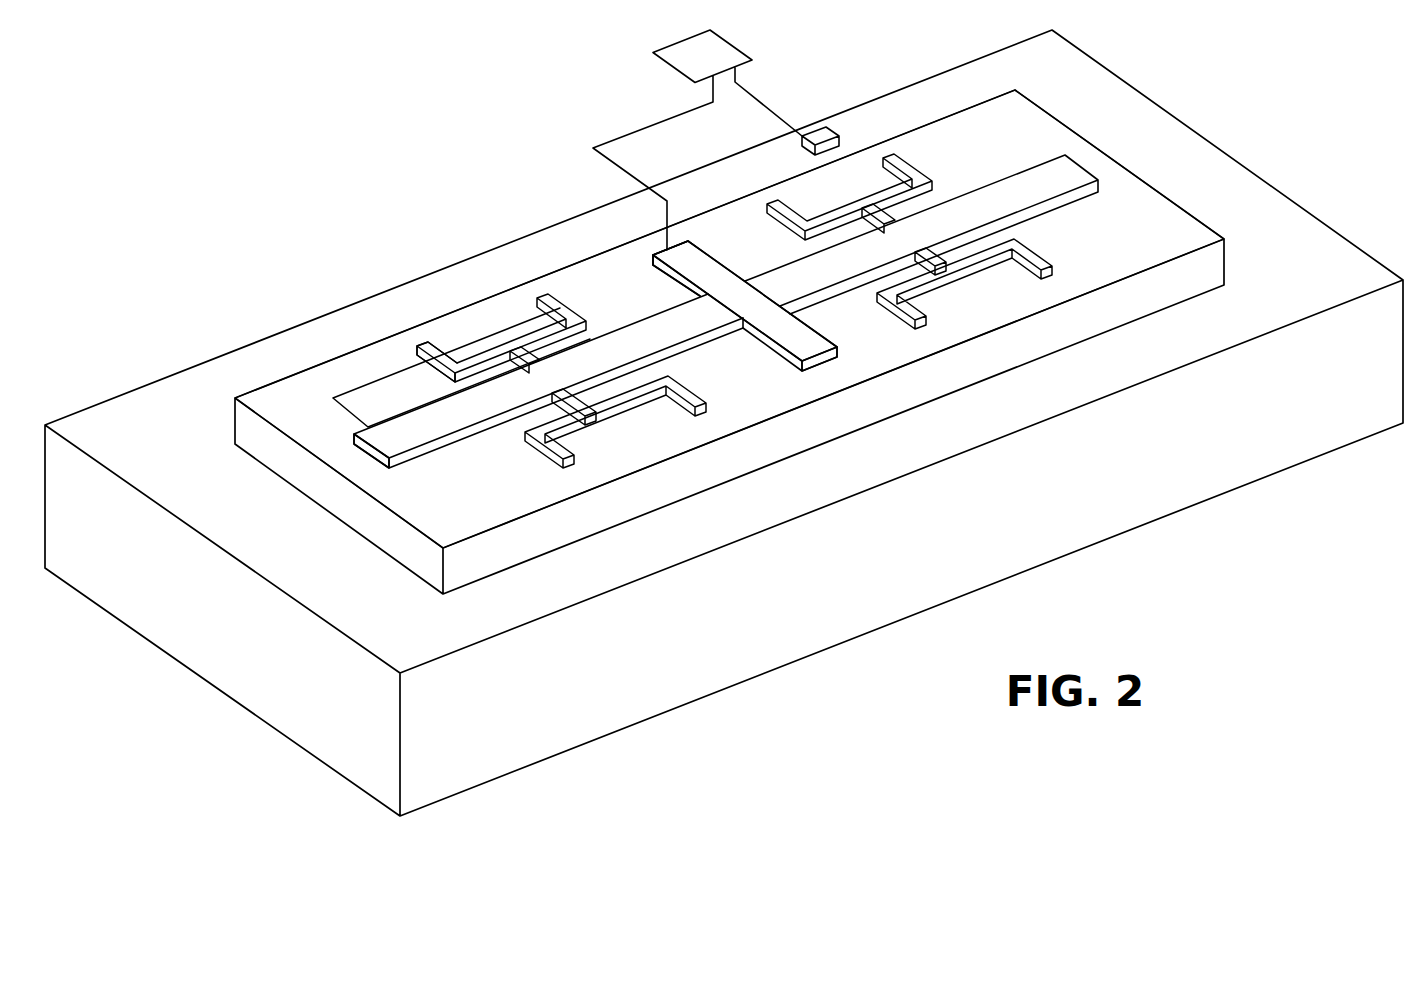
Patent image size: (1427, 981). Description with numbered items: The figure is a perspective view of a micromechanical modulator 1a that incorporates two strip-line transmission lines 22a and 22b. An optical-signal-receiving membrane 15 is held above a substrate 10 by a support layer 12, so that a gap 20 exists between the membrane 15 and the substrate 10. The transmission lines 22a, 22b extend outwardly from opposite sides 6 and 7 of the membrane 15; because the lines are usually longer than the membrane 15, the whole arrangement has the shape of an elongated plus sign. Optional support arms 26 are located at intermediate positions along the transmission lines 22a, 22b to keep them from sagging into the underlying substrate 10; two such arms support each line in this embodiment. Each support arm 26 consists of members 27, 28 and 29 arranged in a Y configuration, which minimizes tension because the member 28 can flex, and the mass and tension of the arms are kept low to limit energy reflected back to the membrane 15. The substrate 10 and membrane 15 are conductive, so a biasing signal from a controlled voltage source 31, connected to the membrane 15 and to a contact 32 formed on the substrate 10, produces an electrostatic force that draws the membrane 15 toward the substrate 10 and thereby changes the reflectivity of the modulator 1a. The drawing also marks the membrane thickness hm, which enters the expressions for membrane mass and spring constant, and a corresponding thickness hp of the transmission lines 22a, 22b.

The micromechanical modulator 1a is at (383, 180).
The side of the membrane 6 is at (788, 352).
The side of the membrane 7 is at (722, 258).
The substrate 10 is at (568, 735).
The support layer 12 is at (420, 553).
The optical-signal-receiving membrane 15 is at (690, 249).
The gap 20 is at (662, 302).
The strip-line transmission line 22a is at (402, 440).
The strip-line transmission line 22b is at (1077, 177).
The support arm 26 is at (404, 366).
The member of support arm 27 is at (520, 348).
The member of support arm 28 is at (477, 360).
The member of support arm 29 is at (422, 337).
The controlled voltage source 31 is at (684, 70).
The contact 32 is at (842, 138).
The plate spring height hp is at (352, 434).
The thickness of the membrane hm is at (842, 344).